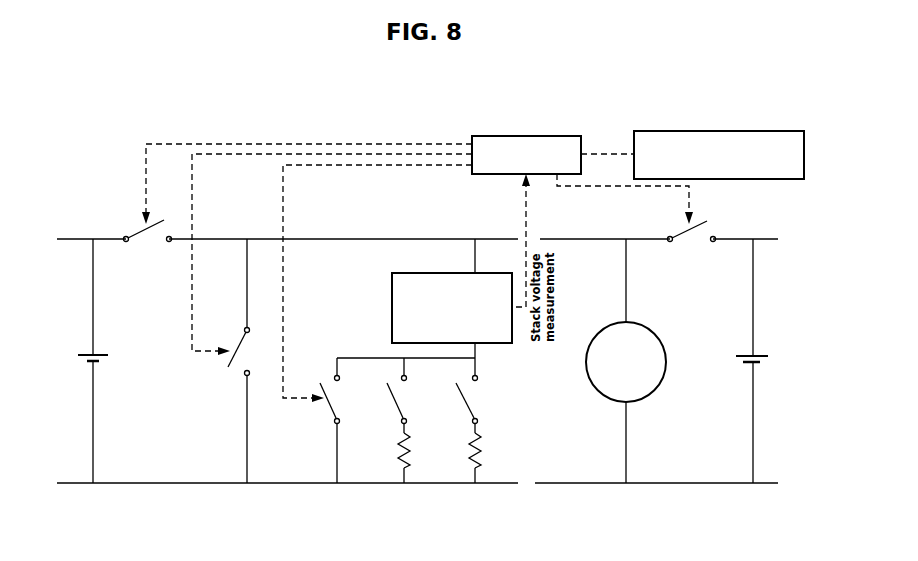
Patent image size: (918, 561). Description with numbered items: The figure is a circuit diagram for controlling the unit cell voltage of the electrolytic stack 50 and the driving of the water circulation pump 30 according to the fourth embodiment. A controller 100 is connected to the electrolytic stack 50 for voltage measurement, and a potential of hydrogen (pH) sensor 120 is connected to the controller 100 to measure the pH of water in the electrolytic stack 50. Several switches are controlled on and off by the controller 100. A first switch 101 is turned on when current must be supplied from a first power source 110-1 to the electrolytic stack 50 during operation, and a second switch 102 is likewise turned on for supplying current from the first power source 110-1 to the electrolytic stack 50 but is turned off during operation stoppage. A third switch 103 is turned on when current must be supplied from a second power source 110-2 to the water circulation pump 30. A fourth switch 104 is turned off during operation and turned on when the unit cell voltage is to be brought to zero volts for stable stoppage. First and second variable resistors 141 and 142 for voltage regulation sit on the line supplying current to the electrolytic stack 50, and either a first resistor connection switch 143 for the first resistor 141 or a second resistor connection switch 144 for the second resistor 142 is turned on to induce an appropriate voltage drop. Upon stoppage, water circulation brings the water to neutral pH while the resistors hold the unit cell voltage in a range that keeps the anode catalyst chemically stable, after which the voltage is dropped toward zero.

The controller 100 is at (520, 136).
The potential of hydrogen (pH) sensor 120 is at (712, 131).
The first switch 101 is at (140, 232).
The third switch 103 is at (703, 226).
The fourth switch 104 is at (228, 362).
The second switch 102 is at (326, 406).
The first resistor connection switch 143 is at (392, 398).
The second resistor connection switch 144 is at (466, 396).
The first variable resistor 141 is at (396, 462).
The second variable resistor 142 is at (482, 460).
The electrolytic stack 50 is at (392, 302).
The water circulation pump 30 is at (642, 330).
The first power source 110-1 is at (79, 355).
The second power source 110-2 is at (764, 355).